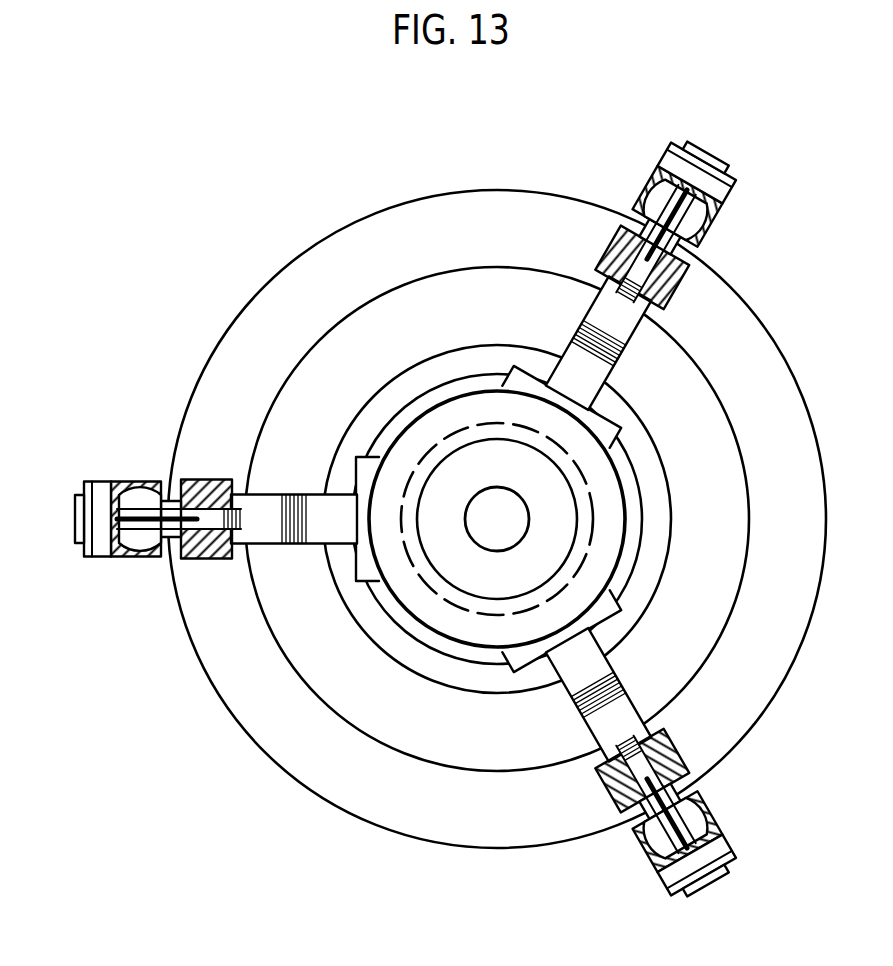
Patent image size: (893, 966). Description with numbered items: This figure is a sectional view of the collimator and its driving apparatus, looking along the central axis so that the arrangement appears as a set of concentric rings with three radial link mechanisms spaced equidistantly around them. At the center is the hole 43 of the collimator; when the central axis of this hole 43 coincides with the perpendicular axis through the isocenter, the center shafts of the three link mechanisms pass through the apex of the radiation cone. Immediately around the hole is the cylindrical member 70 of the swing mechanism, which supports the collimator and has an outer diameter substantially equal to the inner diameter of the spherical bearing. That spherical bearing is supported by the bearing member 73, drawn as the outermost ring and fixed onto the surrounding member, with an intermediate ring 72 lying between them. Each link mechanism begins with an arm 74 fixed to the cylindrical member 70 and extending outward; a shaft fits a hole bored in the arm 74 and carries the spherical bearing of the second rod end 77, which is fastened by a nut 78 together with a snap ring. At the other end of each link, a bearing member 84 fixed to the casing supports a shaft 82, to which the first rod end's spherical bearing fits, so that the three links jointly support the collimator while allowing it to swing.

The hole 43 is at (494, 488).
The cylindrical member 70 is at (628, 507).
The intermediate ring 72 is at (752, 498).
The bearing member 73 is at (268, 280).
The arm 74 is at (298, 544).
The second rod end 77 is at (108, 480).
The nut 78 is at (76, 505).
The shaft 82 is at (172, 497).
The bearing member 84 is at (215, 558).